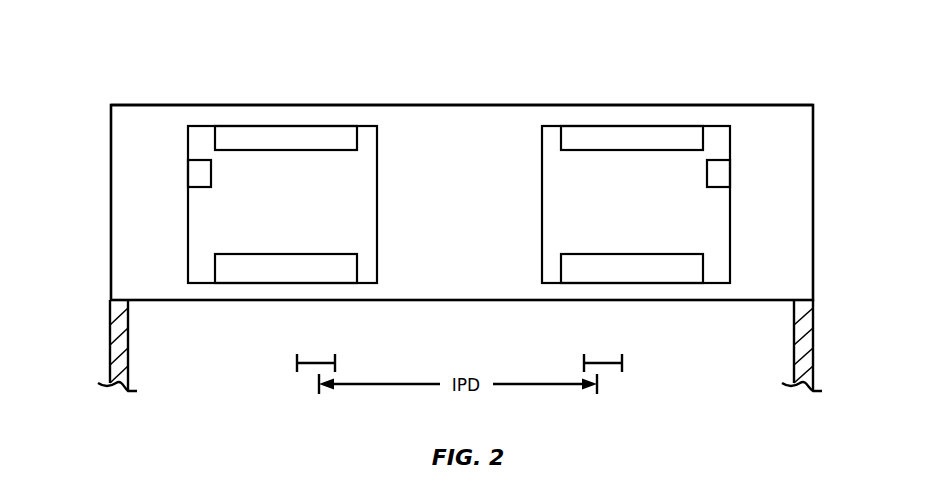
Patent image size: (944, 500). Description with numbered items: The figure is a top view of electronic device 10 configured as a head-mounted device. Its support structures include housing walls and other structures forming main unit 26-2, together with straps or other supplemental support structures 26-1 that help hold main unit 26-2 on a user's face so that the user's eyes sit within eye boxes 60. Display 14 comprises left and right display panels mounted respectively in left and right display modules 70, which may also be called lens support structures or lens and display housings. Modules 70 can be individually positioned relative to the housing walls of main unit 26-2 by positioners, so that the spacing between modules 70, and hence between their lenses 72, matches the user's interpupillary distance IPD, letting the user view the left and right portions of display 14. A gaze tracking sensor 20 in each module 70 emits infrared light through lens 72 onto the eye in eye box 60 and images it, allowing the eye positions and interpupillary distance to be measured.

The electronic device 10 is at (744, 46).
The display 14 is at (283, 132).
The gaze tracking sensor 20 is at (204, 187).
The supplemental support structures 26-1 is at (110, 360).
The main unit 26-2 is at (784, 105).
The eye box 60 is at (335, 357).
The display module 70 is at (542, 213).
The lens 72 is at (287, 254).